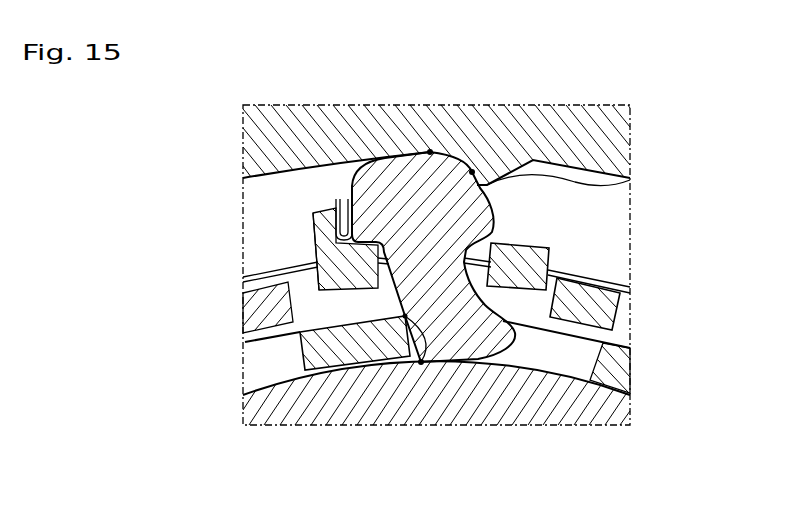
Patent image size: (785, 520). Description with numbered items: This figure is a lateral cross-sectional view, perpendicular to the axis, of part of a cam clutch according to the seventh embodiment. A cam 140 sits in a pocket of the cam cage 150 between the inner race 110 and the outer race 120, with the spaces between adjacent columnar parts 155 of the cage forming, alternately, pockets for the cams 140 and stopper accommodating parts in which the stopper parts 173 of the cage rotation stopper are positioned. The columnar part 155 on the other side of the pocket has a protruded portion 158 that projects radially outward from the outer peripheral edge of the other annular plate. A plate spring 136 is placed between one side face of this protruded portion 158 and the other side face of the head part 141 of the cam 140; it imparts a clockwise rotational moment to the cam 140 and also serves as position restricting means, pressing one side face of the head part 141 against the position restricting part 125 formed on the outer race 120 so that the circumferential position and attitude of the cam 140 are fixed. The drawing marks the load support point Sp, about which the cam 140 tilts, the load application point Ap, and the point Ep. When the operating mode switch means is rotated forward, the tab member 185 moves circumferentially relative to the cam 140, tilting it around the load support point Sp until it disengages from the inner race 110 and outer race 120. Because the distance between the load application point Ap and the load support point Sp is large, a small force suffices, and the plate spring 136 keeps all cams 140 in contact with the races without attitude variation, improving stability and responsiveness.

The inner race 110 is at (558, 414).
The outer race 120 is at (538, 117).
The position restricting part 125 is at (630, 180).
The plate spring 136 is at (348, 198).
The cam 140 is at (450, 264).
The head part 141 is at (382, 170).
The cam cage 150 is at (557, 249).
The columnar part 155 is at (317, 264).
The protruded portion 158 is at (313, 232).
The stopper part 173 is at (607, 300).
The tab member 185 is at (331, 360).
The end point Ep is at (430, 149).
The load support point Sp is at (473, 169).
The load application point Ap is at (421, 365).